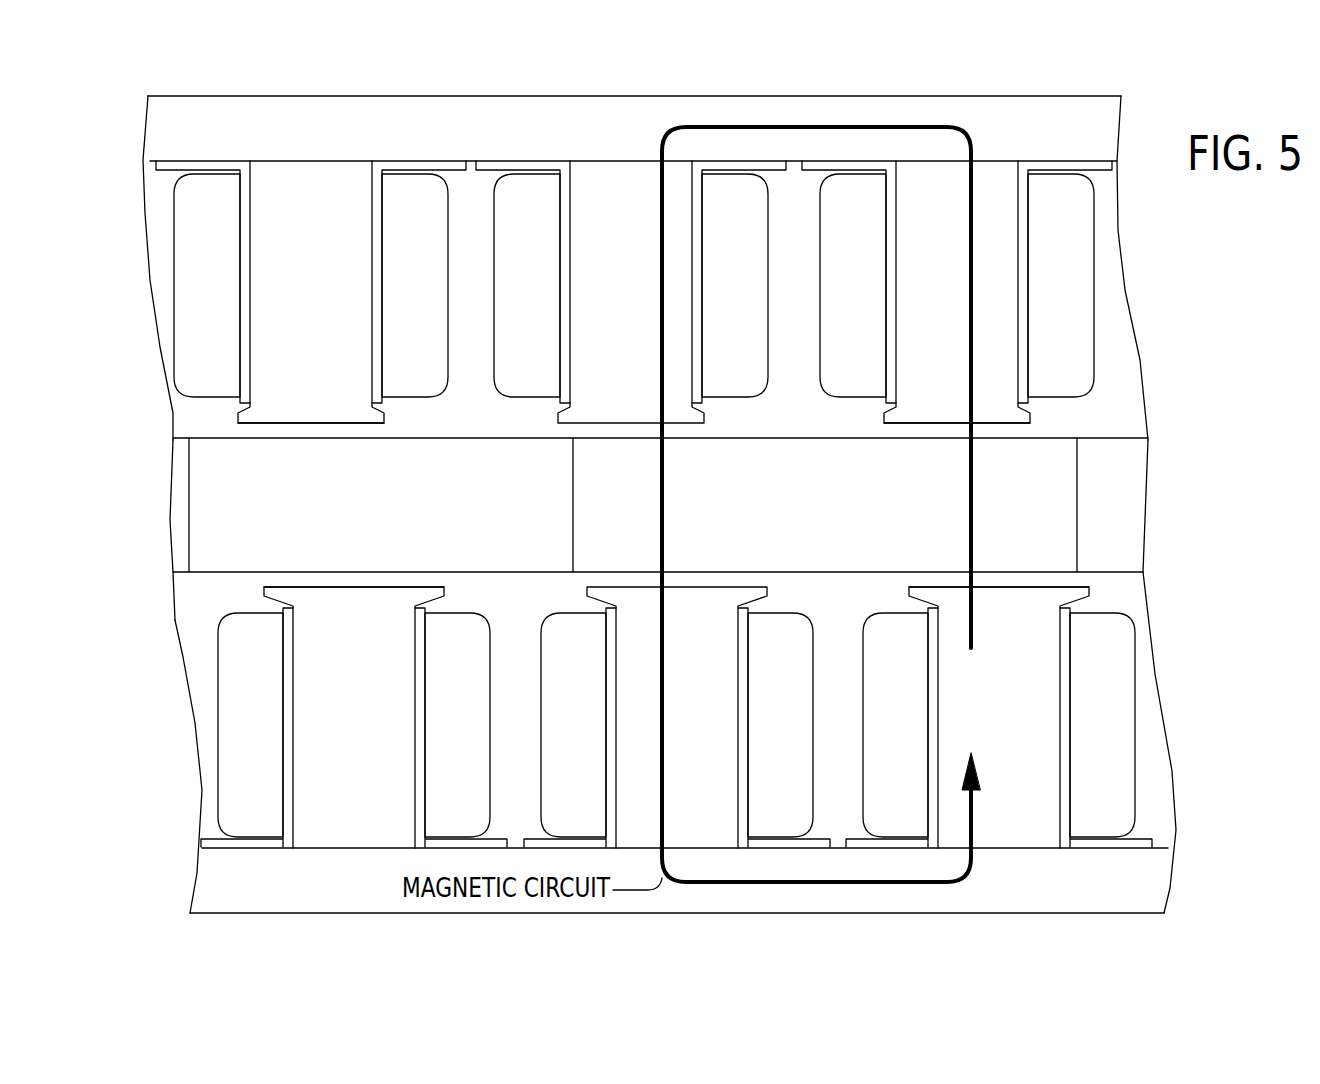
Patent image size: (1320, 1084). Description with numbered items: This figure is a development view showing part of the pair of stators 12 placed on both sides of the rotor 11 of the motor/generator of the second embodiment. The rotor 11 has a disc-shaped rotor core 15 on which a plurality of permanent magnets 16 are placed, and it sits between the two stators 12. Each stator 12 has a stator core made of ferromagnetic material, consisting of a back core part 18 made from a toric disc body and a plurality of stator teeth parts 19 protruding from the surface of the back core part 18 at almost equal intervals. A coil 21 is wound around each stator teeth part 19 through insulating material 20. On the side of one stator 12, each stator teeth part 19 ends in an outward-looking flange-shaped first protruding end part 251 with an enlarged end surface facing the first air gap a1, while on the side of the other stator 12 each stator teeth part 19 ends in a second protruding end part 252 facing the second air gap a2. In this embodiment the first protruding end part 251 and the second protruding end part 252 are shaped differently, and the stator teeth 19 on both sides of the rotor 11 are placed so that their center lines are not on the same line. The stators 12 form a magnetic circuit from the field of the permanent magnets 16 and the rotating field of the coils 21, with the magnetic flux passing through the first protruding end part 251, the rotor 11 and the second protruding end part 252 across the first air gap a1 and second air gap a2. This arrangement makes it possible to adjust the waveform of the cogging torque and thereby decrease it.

The rotor 11 is at (671, 529).
The stators 12 is at (691, 505).
The rotor core 15 is at (1131, 522).
The permanent magnets 16 is at (213, 509).
The back core part 18 is at (700, 107).
The stator teeth parts 19 is at (663, 502).
The insulating material 20 is at (1119, 173).
The coil 21 is at (227, 289).
The first protruding end part 251 is at (305, 412).
The second protruding end part 252 is at (360, 597).
The first air gap a1 is at (873, 431).
The second air gap a2 is at (895, 577).